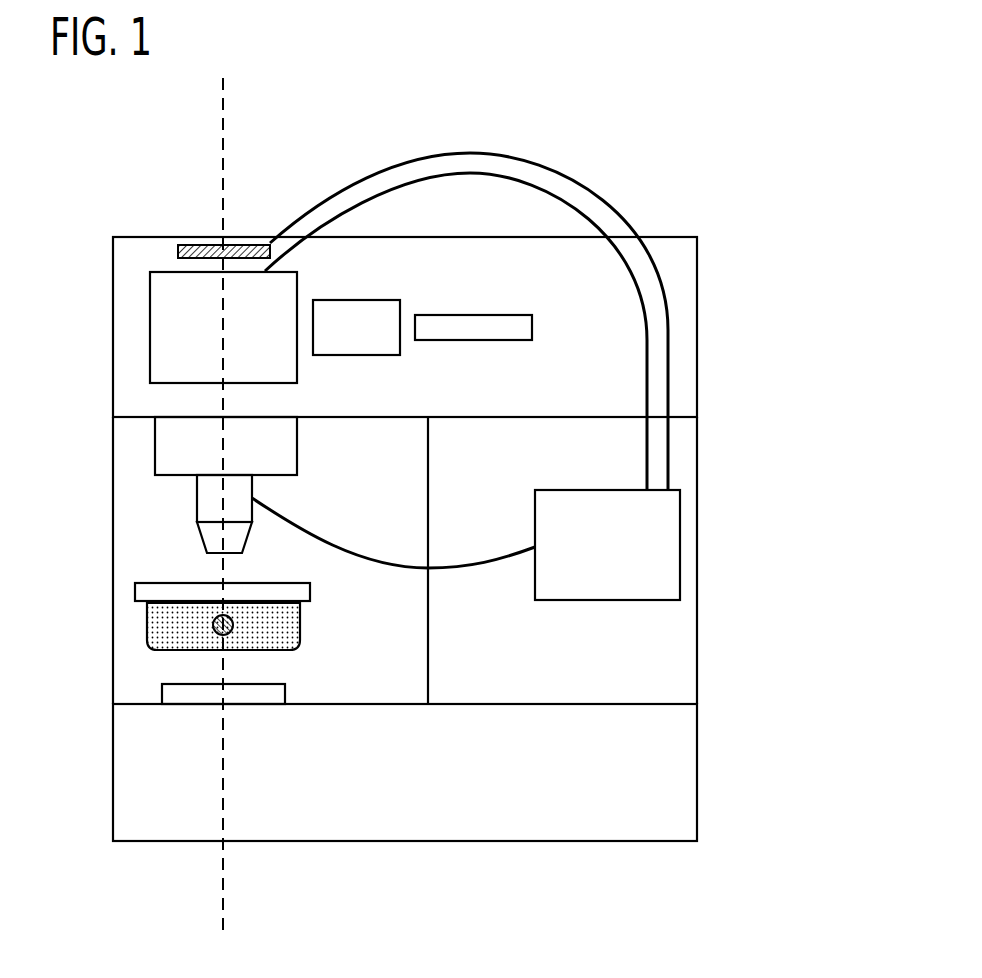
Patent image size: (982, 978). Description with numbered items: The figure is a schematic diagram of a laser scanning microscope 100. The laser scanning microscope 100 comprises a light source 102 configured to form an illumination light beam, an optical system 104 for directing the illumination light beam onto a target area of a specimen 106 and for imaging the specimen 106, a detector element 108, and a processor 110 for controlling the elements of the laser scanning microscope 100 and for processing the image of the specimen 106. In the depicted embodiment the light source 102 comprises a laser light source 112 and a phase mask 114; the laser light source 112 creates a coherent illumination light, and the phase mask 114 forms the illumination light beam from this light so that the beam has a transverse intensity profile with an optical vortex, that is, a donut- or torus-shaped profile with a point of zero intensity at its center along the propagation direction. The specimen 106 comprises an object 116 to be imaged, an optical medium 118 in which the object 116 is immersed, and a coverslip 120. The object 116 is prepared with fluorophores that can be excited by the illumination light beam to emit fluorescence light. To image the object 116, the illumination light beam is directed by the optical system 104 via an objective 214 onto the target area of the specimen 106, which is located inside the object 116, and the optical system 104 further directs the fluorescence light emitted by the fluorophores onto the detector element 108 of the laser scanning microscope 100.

The laser scanning microscope 100 is at (740, 318).
The light source 102 is at (530, 362).
The optical system 104 is at (247, 342).
The specimen 106 is at (217, 636).
The detector element 108 is at (190, 245).
The processor 110 is at (630, 560).
The laser light source 112 is at (470, 315).
The phase mask 114 is at (380, 342).
The object 116 is at (290, 656).
The optical medium 118 is at (147, 630).
The coverslip 120 is at (135, 590).
The objective 214 is at (197, 498).